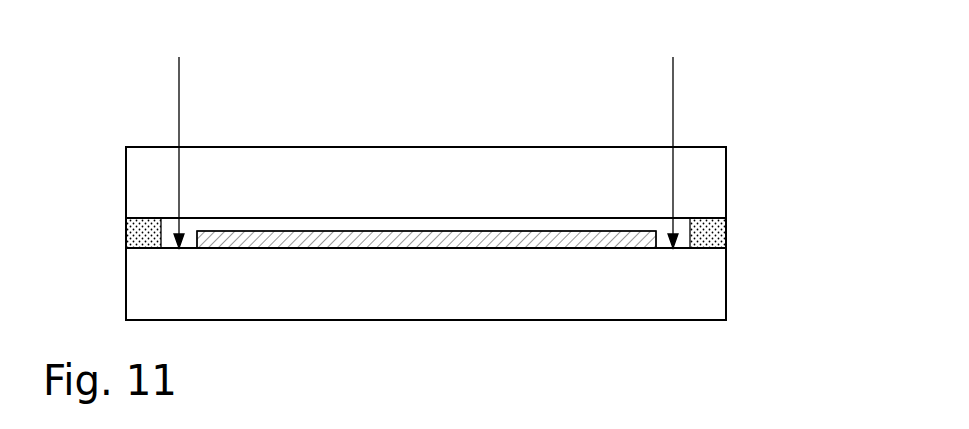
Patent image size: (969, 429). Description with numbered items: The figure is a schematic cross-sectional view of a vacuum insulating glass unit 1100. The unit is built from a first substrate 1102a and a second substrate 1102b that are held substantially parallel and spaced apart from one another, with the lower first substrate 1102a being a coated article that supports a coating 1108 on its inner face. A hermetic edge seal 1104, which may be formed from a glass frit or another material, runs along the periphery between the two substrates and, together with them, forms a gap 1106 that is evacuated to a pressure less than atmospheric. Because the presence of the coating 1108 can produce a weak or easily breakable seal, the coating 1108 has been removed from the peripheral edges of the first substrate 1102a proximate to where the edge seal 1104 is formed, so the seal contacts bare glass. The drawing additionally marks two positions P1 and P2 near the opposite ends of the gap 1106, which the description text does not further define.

The vacuum insulating glass unit 1100 is at (698, 120).
The first substrate 1102a is at (726, 302).
The second substrate 1102b is at (726, 153).
The hermetic edge seal 1104 is at (126, 236).
The gap 1106 is at (444, 223).
The coating 1108 is at (658, 240).
The first pressure point P1 is at (179, 138).
The second pressure point P2 is at (675, 138).